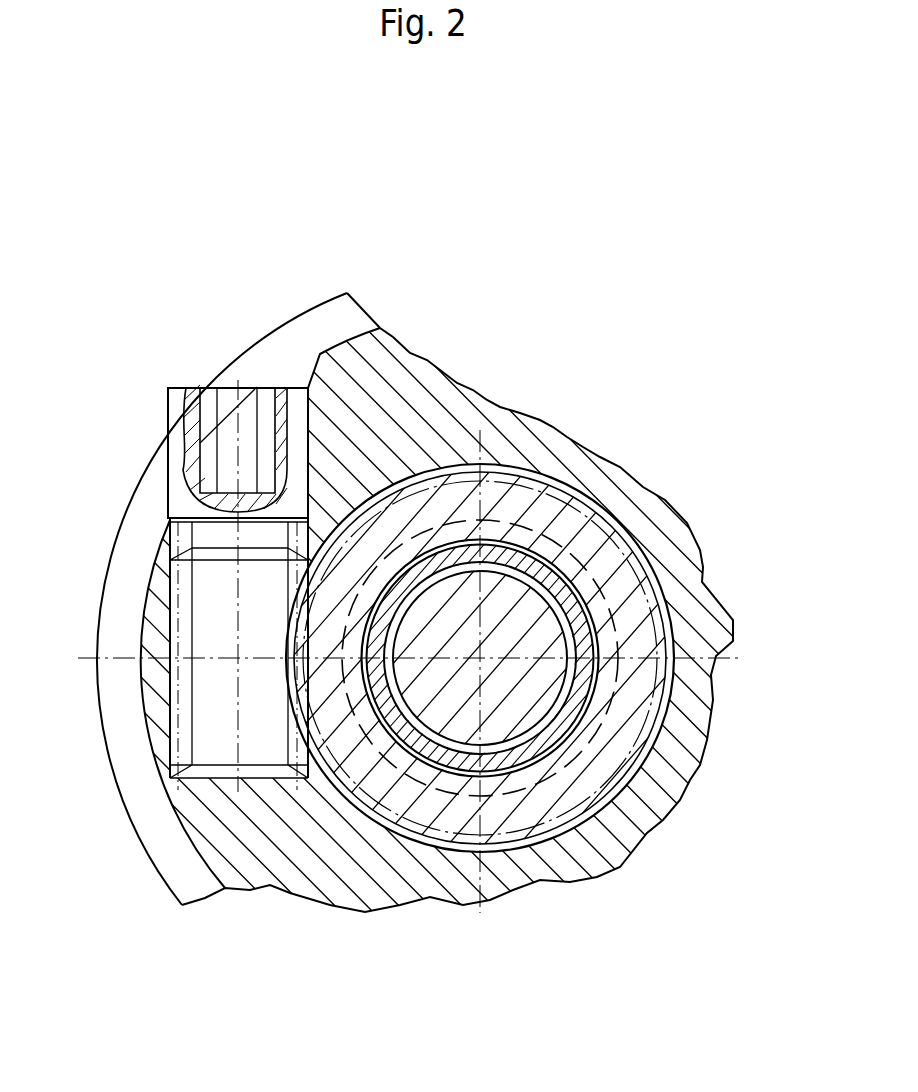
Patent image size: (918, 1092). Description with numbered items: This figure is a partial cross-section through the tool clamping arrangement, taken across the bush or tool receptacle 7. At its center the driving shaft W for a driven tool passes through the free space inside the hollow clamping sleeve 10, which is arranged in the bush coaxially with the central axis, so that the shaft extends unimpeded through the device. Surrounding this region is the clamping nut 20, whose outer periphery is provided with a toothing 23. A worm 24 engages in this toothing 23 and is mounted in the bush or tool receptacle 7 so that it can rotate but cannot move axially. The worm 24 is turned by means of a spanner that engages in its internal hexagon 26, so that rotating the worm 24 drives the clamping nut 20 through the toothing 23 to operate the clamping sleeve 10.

The housing 7 is at (418, 427).
The bearing inner ring 10 is at (585, 643).
The bearing 20 is at (540, 518).
The bore 23 is at (630, 543).
The screw 24 is at (210, 623).
The screw head 26 is at (238, 388).
The shaft W is at (533, 700).